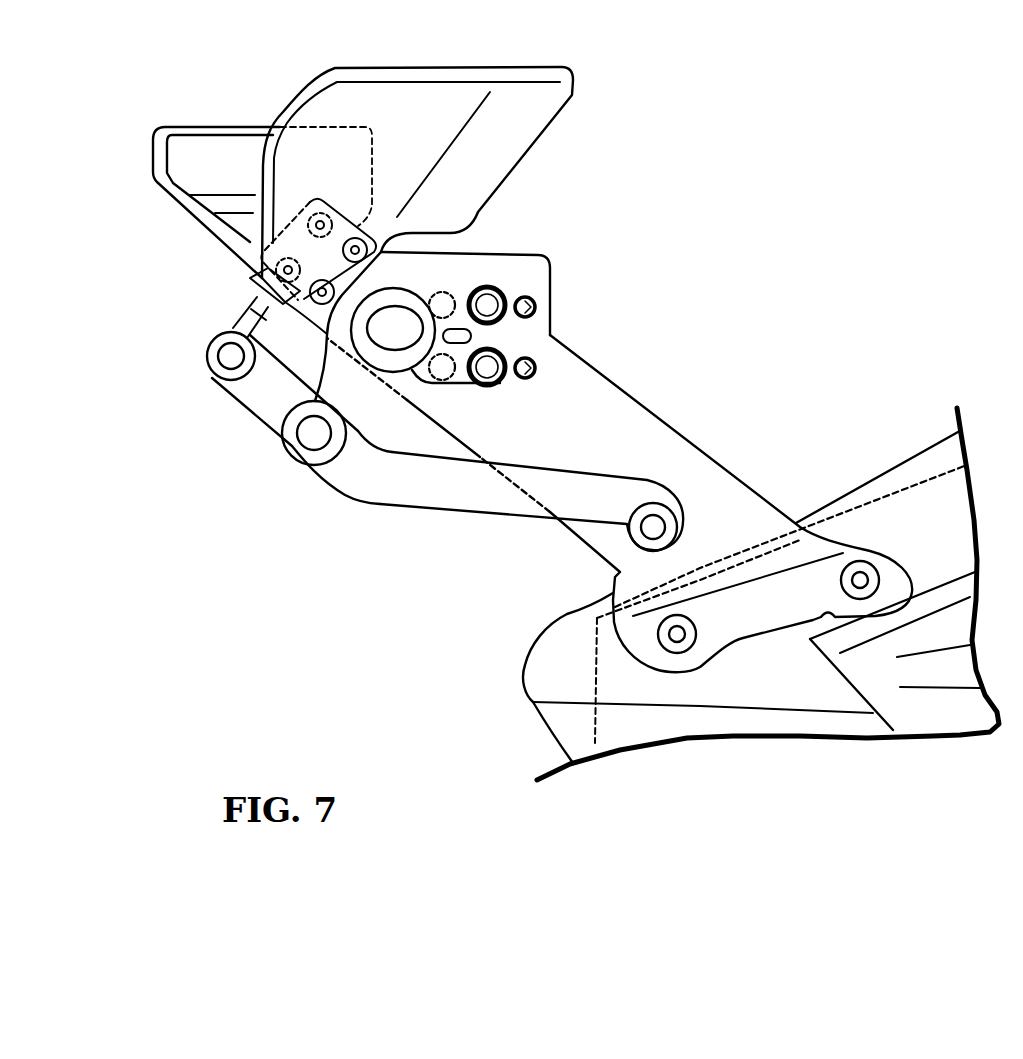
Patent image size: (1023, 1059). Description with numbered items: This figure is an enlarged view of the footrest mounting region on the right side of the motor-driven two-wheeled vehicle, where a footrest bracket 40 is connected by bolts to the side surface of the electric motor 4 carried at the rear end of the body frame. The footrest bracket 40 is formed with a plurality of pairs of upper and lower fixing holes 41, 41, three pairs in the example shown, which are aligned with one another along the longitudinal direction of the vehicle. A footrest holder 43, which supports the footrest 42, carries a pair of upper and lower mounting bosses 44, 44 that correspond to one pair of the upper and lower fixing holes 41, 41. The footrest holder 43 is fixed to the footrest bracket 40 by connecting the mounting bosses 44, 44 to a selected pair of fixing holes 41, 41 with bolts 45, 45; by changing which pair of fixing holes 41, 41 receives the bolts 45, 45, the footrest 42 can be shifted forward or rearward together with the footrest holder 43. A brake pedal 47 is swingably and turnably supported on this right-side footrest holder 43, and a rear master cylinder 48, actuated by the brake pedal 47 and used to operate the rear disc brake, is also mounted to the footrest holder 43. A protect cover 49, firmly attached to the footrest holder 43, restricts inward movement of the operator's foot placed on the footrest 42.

The electric motor 4 is at (920, 510).
The footrest bracket 40 is at (682, 458).
The fixing hole 41 is at (447, 298).
The footrest 42 is at (397, 317).
The footrest holder 43 is at (375, 410).
The mounting boss 44 is at (498, 287).
The bolt 45 is at (500, 349).
The brake pedal 47 is at (490, 495).
The rear master cylinder 48 is at (225, 150).
The protect cover 49 is at (420, 97).